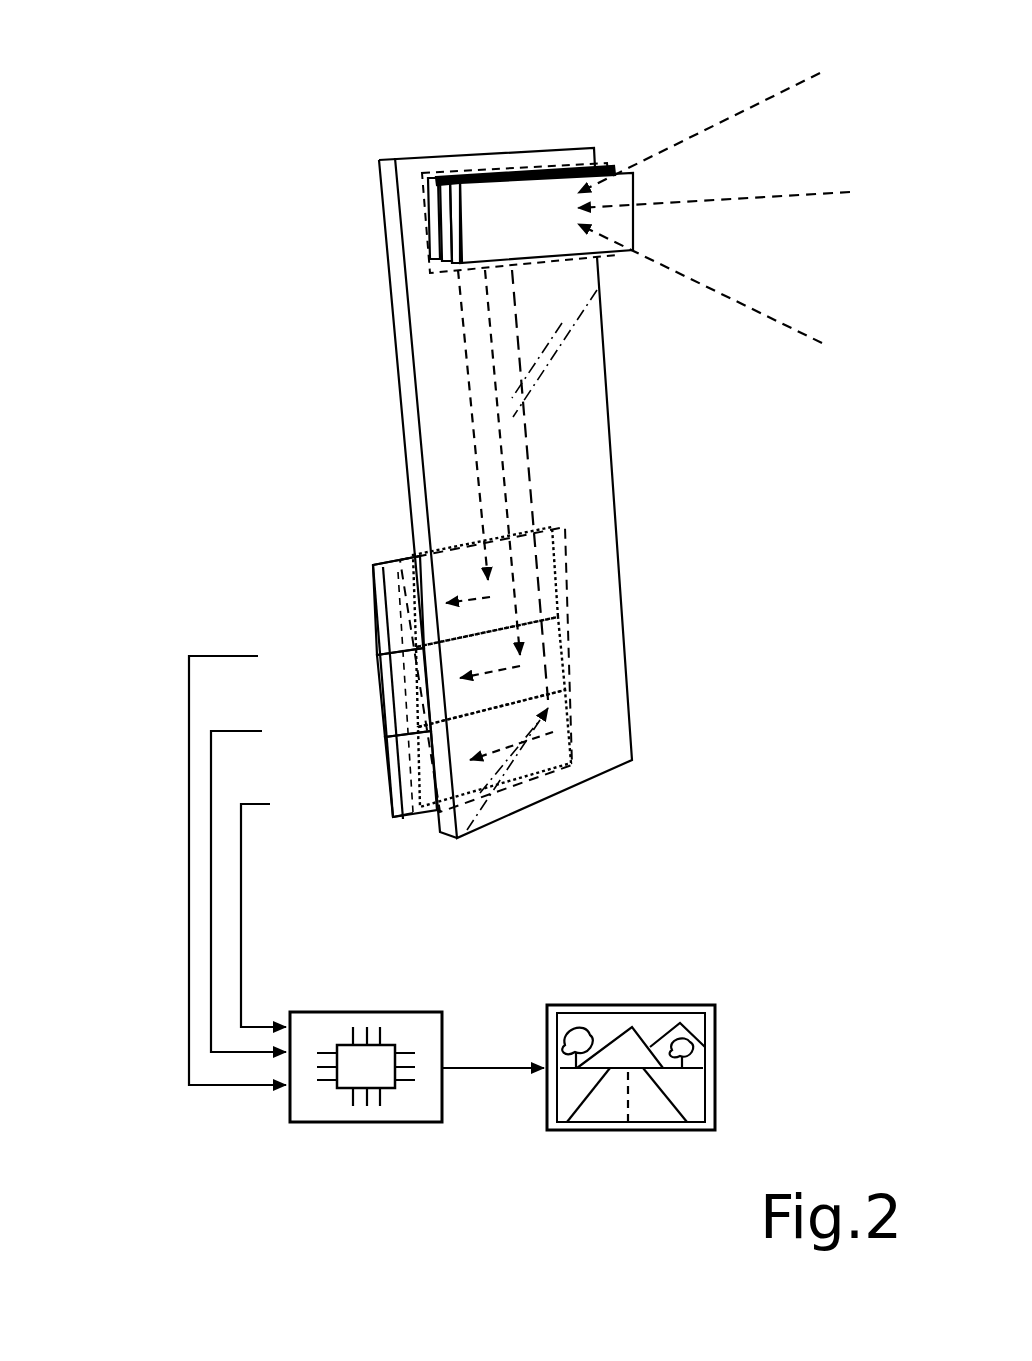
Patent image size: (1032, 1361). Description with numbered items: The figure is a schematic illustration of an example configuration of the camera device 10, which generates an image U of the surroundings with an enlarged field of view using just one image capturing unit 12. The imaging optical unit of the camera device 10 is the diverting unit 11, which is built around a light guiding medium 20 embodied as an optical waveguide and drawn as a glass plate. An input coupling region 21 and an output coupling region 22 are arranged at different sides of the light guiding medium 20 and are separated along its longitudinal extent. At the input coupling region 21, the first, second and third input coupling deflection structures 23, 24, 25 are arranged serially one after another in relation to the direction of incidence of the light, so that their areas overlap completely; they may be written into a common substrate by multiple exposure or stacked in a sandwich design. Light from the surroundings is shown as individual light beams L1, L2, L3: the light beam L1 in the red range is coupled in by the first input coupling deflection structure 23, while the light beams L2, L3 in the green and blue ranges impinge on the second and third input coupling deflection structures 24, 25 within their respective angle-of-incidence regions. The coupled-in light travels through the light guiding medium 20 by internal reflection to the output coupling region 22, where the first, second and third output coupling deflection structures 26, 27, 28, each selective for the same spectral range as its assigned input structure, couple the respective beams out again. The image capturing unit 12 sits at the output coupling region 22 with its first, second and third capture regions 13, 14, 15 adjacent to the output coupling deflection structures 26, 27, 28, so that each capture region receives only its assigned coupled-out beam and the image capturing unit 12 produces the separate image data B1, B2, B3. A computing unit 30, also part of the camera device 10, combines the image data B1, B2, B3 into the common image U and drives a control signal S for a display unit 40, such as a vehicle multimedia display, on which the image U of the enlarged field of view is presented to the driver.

The camera device 10 is at (348, 98).
The light guiding medium 20 is at (380, 240).
The input coupling region 21 is at (587, 172).
The output coupling region 22 is at (415, 822).
The first input coupling deflection structure 23 is at (435, 176).
The second input coupling deflection structure 24 is at (482, 172).
The third input coupling deflection structure 25 is at (534, 168).
The diverting unit 11 is at (558, 814).
The image capturing unit 12 is at (409, 675).
The first capture region 13 is at (382, 623).
The second capture region 14 is at (388, 700).
The third capture region 15 is at (397, 777).
The first output coupling deflection structure 26 is at (552, 578).
The second output coupling deflection structure 27 is at (558, 647).
The third output coupling deflection structure 28 is at (566, 733).
The computing unit 30 is at (313, 1012).
The display unit 40 is at (673, 1007).
The control signal S is at (485, 1067).
The image of the surroundings U is at (682, 1091).
The image data B1 is at (189, 786).
The image data B2 is at (211, 865).
The image data B3 is at (241, 933).
The light beam L1 is at (787, 92).
The light beam L2 is at (810, 195).
The light beam L3 is at (790, 330).